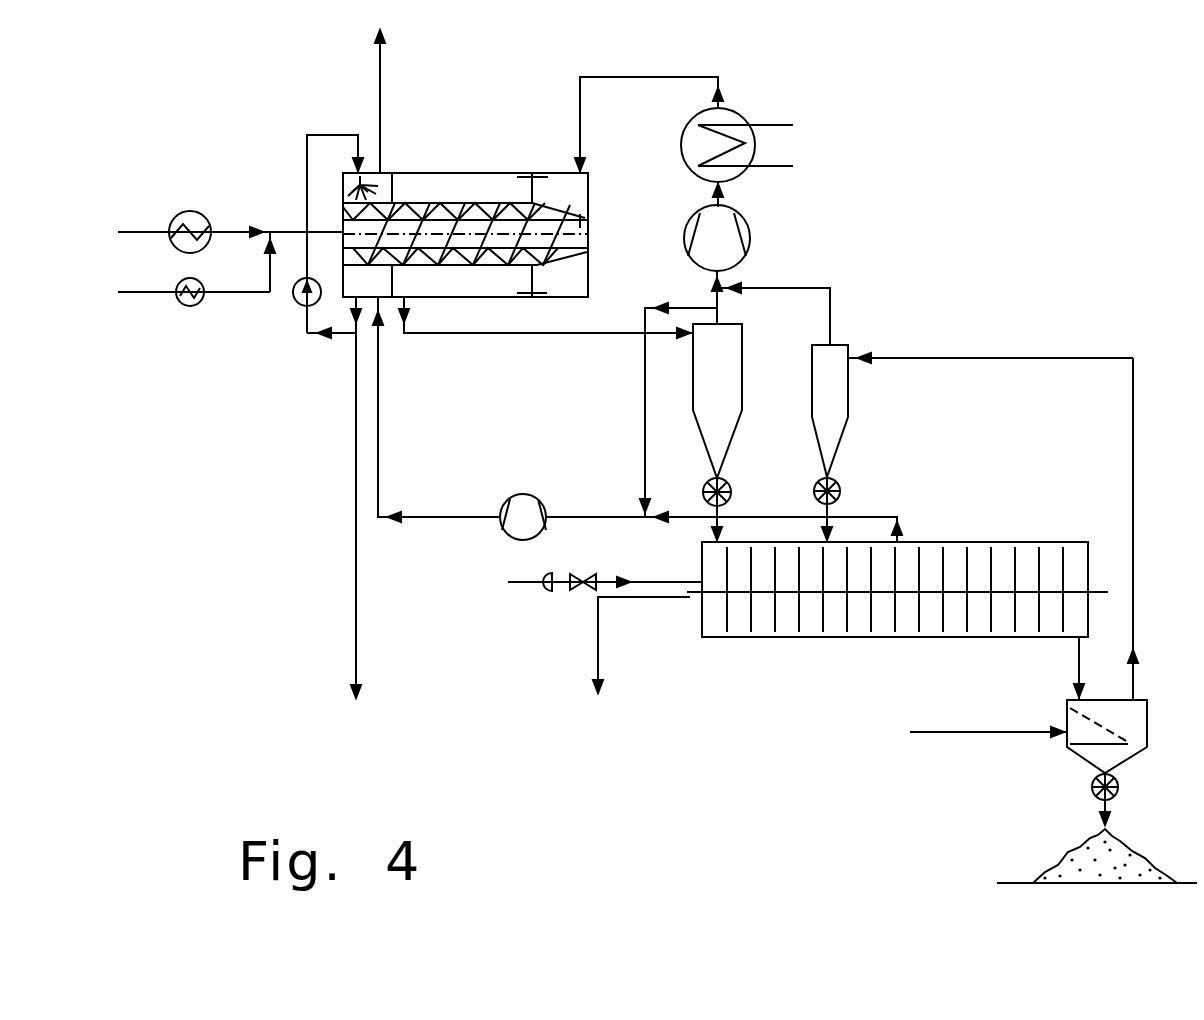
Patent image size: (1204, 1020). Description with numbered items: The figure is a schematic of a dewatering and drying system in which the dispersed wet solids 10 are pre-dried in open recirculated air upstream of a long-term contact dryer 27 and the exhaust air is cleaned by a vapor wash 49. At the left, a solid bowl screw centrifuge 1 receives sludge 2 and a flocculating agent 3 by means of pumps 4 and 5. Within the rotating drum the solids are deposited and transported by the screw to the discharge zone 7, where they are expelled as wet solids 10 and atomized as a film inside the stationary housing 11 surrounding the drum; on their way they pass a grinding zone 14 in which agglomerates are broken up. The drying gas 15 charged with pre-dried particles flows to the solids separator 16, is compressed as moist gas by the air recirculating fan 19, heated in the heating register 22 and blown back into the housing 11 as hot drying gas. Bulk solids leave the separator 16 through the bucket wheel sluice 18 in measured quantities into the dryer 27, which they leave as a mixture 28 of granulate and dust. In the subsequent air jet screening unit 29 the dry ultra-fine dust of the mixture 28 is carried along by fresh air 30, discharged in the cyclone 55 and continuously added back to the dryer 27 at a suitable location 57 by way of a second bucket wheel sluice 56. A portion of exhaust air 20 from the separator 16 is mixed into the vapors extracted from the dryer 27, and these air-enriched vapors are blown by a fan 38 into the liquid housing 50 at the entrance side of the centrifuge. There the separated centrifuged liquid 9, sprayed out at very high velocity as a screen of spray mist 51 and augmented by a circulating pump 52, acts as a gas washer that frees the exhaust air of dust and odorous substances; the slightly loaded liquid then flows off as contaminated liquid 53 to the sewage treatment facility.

The solid bowl screw centrifuge 1 is at (437, 186).
The sludge 2 is at (143, 232).
The flocculating agent 3 is at (194, 408).
The pump 4 is at (200, 213).
The pump 5 is at (190, 401).
The discharge zone 7 is at (588, 197).
The centrifuged liquid 9 is at (398, 410).
The wet solids 10 is at (560, 186).
The housing 11 is at (485, 175).
The grinding zone 14 is at (520, 297).
The drying gas 15 is at (443, 333).
The solids separator 16 is at (745, 345).
The bucket wheel sluice 18 is at (850, 388).
The air recirculating fan 19 is at (740, 215).
The exhaust air 20 is at (645, 370).
The heating register 22 is at (740, 118).
The long-term contact dryer 27 is at (762, 637).
The mixture 28 is at (1078, 662).
The air jet screening unit 29 is at (1070, 750).
The fresh air 30 is at (978, 737).
The fan 38 is at (505, 535).
The vapor wash 49 is at (362, 176).
The liquid housing 50 is at (350, 188).
The spray mist 51 is at (388, 180).
The circulating pump 52 is at (250, 378).
The contaminated liquid 53 is at (324, 497).
The cyclone 55 is at (733, 477).
The bucket wheel sluice 56 is at (838, 480).
The location 57 is at (830, 540).